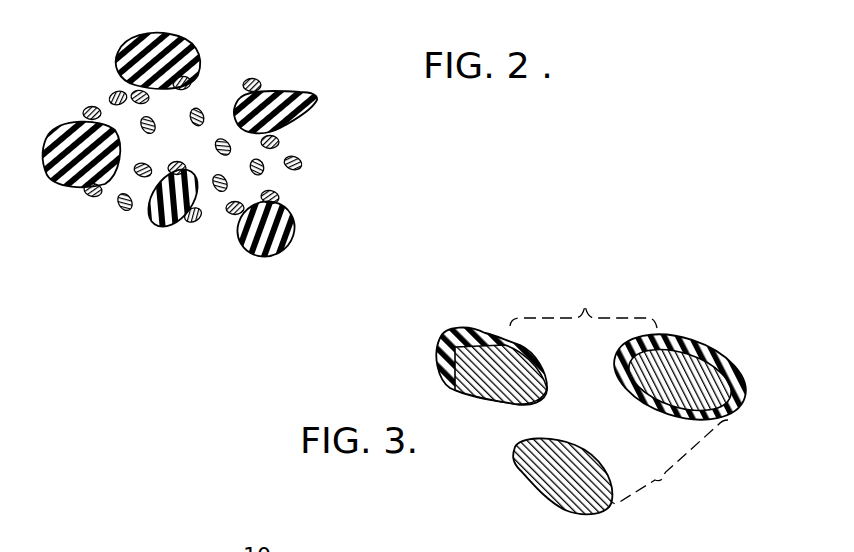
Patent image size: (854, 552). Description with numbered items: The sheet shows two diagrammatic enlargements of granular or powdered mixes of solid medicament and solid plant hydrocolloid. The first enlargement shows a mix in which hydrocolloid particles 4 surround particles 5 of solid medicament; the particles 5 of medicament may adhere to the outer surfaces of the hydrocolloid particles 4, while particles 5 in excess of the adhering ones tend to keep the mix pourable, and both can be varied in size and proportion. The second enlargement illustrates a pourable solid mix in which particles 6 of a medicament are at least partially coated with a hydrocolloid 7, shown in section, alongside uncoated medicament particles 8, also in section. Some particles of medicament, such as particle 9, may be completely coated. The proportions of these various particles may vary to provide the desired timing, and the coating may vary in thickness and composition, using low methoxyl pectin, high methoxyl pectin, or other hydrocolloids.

In FIG. 2, the hydrocolloid particles 4 is at (274, 92).
In FIG. 2, the particles of solid medicament 5 is at (112, 92).
In FIG. 3, the particles of medicament 6 is at (523, 373).
In FIG. 3, the hydrocolloid 7 is at (466, 330).
In FIG. 3, the uncoated medicament particles 8 is at (590, 465).
In FIG. 3, the completely coated particle 9 is at (705, 371).